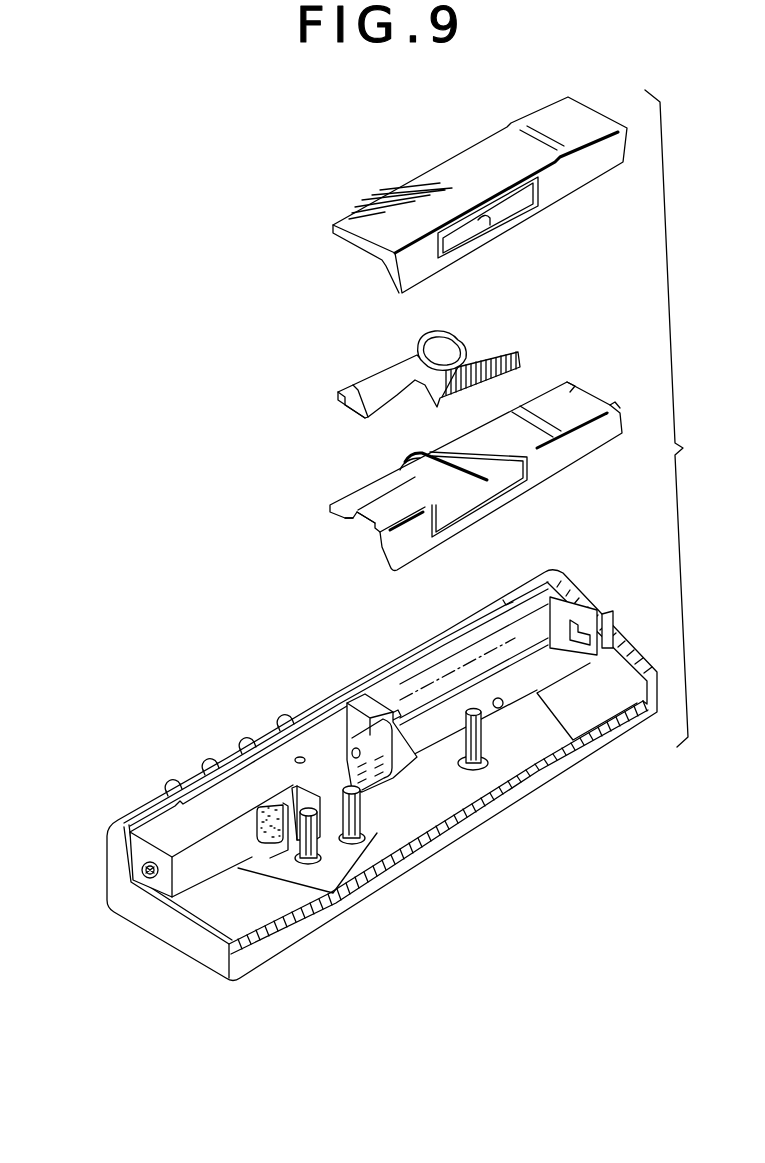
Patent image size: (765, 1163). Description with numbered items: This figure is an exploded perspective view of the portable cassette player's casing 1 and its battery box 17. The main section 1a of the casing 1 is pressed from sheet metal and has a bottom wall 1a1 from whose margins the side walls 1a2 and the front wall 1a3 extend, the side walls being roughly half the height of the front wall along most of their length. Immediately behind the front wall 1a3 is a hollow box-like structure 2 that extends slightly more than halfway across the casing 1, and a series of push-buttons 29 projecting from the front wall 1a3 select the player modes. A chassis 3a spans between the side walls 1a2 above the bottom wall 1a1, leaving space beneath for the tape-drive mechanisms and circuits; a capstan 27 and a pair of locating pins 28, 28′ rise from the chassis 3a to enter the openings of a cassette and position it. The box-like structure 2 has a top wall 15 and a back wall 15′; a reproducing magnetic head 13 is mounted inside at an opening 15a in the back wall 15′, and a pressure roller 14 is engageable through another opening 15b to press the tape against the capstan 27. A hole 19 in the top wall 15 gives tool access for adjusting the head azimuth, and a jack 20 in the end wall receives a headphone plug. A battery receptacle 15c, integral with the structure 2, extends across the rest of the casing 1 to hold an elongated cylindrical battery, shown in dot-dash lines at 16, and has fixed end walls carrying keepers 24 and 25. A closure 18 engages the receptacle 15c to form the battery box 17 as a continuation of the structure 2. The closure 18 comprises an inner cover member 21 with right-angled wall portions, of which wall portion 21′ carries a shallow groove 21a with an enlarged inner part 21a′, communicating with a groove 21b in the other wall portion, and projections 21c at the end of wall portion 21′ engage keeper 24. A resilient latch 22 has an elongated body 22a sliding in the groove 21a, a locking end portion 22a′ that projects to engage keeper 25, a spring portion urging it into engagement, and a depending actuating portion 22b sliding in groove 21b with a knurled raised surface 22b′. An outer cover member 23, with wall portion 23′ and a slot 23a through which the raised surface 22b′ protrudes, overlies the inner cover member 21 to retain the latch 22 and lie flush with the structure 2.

The casing 1 is at (112, 850).
The main section 1a is at (195, 933).
The bottom wall 1a1 is at (515, 790).
The side walls 1a2 is at (218, 968).
The front wall 1a3 is at (398, 662).
The box-like structure 2 is at (207, 773).
The chassis 3a is at (555, 760).
The reproducing magnetic head 13 is at (375, 785).
The pressure roller 14 is at (277, 803).
The top wall 15 is at (313, 727).
The back wall 15′ is at (197, 877).
The opening 15a is at (354, 749).
The opening 15b is at (280, 838).
The battery receptacle 15c is at (502, 708).
The cylindrical battery 16 is at (452, 643).
The battery box 17 is at (500, 652).
The closure 18 is at (290, 293).
The hole 19 is at (298, 758).
The jack 20 is at (143, 878).
The inner cover member 21 is at (575, 440).
The wall portion 21′ is at (478, 430).
The groove 21a is at (368, 497).
The enlarged inner part of groove 21a′ is at (412, 458).
The groove 21b is at (500, 495).
The projections 21c is at (615, 403).
The latch 22 is at (397, 400).
The elongated body 22a is at (398, 372).
The locking end portion 22a′ is at (340, 412).
The actuating portion 22b is at (480, 385).
The raised knurled surface 22b′ is at (519, 360).
The outer cover member 23 is at (440, 178).
The wall portion 23′ is at (480, 152).
The slot 23a is at (485, 218).
The keeper 24 is at (583, 600).
The keeper 25 is at (390, 712).
The capstan 27 is at (300, 845).
The locating pin 28 is at (475, 770).
The locating pin 28′ is at (352, 843).
The push-buttons 29 is at (247, 740).